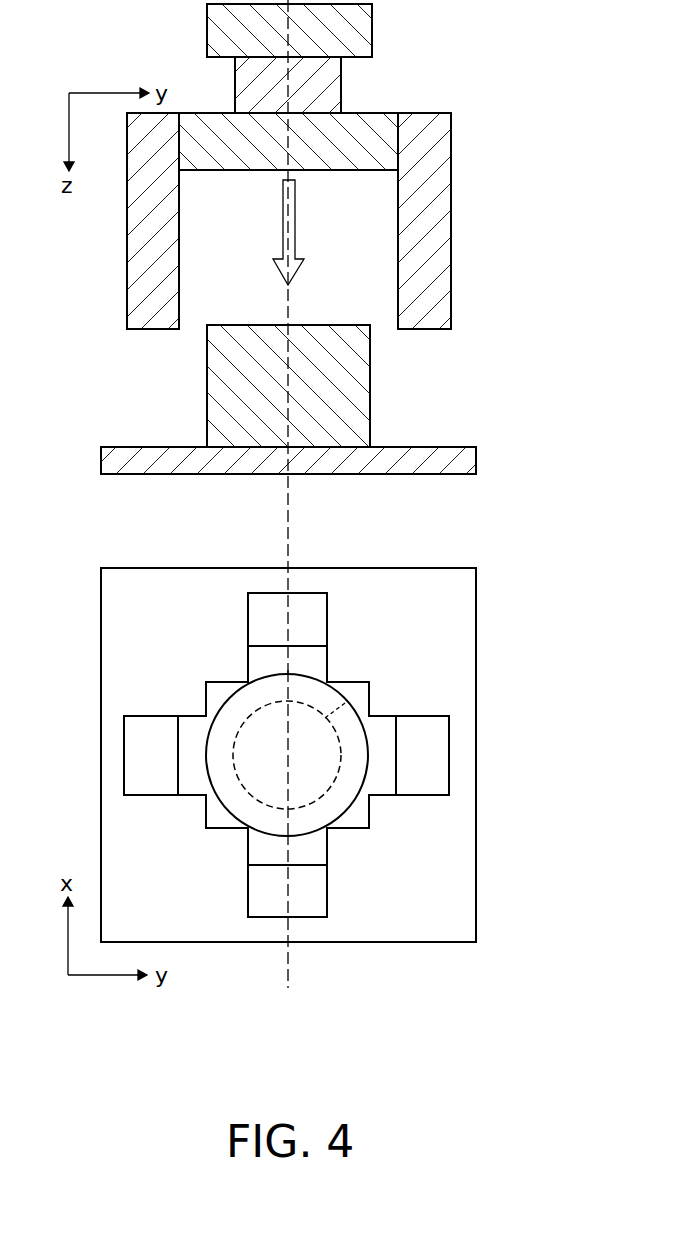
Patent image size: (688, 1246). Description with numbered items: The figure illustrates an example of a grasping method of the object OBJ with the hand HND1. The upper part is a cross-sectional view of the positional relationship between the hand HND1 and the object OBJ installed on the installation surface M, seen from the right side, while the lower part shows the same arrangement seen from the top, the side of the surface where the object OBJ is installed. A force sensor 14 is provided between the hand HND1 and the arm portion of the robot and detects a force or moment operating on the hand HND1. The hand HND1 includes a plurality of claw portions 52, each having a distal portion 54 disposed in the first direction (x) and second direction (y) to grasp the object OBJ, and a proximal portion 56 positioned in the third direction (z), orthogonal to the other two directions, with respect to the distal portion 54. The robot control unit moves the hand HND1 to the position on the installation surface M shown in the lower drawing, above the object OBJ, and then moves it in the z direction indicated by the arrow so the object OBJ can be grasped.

The force sensor 14 is at (341, 90).
The hand HND1 is at (435, 112).
The proximal portion 56 is at (433, 148).
The claw portions 52 is at (428, 227).
The distal portion 54 is at (428, 310).
The object OBJ is at (370, 385).
The installation surface M is at (476, 447).